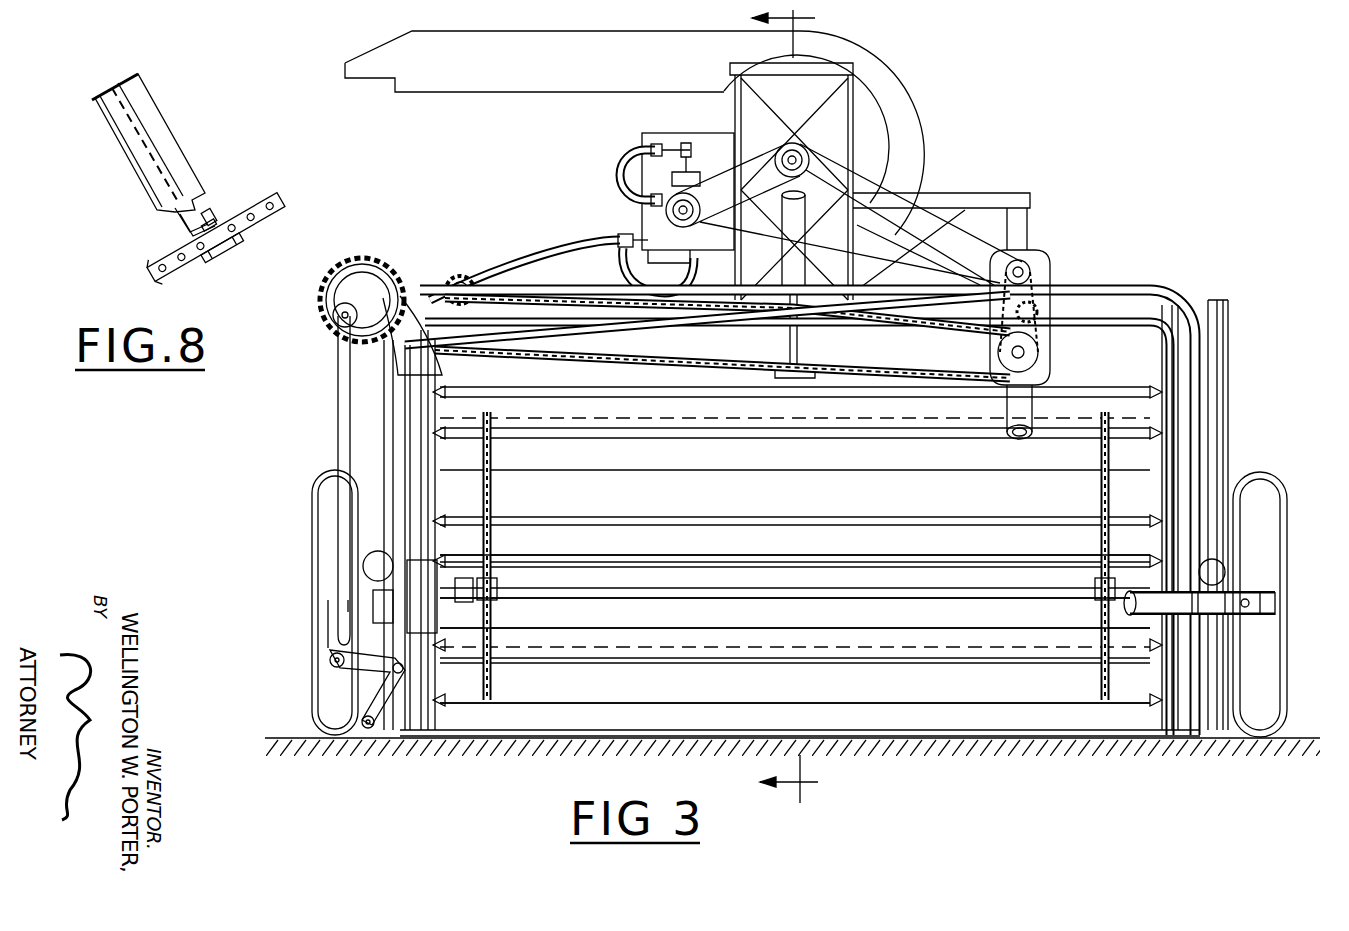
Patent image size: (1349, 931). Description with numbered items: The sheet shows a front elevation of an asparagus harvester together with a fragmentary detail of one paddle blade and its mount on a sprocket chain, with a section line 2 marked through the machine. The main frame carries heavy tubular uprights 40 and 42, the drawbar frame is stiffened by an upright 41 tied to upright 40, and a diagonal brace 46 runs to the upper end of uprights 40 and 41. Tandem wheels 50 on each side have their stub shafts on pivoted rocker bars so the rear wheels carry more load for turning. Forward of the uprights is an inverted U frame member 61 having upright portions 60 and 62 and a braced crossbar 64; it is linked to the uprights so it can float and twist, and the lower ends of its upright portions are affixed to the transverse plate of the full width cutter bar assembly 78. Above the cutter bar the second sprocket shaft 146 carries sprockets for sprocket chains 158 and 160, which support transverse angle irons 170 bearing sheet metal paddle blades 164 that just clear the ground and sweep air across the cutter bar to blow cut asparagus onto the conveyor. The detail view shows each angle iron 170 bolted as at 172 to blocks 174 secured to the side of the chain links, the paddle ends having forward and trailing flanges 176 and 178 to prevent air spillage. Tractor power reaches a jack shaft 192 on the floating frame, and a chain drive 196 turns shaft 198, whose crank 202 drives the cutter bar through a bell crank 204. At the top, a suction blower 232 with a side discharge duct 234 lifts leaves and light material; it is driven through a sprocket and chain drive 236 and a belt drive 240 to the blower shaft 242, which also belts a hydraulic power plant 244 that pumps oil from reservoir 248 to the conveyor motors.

In FIG. 3, the section line 2- 2 is at (796, 402).
In FIG. 3, the tubular upright 40 is at (1180, 369).
In FIG. 3, the upright 41 is at (1227, 380).
In FIG. 3, the tubular upright 42 is at (415, 405).
In FIG. 3, the diagonal brace 46 is at (1213, 411).
In FIG. 3, the tandem wheels 50 is at (322, 696).
In FIG. 3, the upright portion 60 is at (1197, 454).
In FIG. 3, the inverted U frame member 61 is at (1143, 286).
In FIG. 3, the upright portion 62 is at (396, 449).
In FIG. 3, the braced crossbar 64 is at (1095, 287).
In FIG. 3, the cutter bar assembly 78 is at (1028, 745).
In FIG. 3, the second sprocket shaft 146 is at (600, 598).
In FIG. 8, the sprocket chain 158 is at (272, 218).
In FIG. 3, the sprocket chain 158 is at (1100, 489).
In FIG. 3, the sprocket chain 160 is at (492, 489).
In FIG. 8, the paddle blade 164 is at (160, 158).
In FIG. 3, the paddle blade 164 is at (480, 680).
In FIG. 8, the angle iron 170 is at (192, 229).
In FIG. 8, the bolt 172 is at (214, 214).
In FIG. 8, the block 174 is at (212, 255).
In FIG. 8, the forward flange 176 is at (136, 146).
In FIG. 8, the trailing flange 178 is at (150, 118).
In FIG. 3, the jack shaft 192 is at (1023, 346).
In FIG. 3, the chain drive 196 is at (506, 295).
In FIG. 3, the shaft 198 is at (368, 296).
In FIG. 3, the crank 202 is at (338, 317).
In FIG. 3, the bell crank 204 is at (362, 670).
In FIG. 3, the blower 232 is at (878, 86).
In FIG. 3, the side discharge duct 234 is at (516, 92).
In FIG. 3, the sprocket and chain drive 236 is at (1020, 268).
In FIG. 3, the belt drive 240 is at (808, 197).
In FIG. 3, the blower shaft 242 is at (810, 150).
In FIG. 3, the hydraulic power plant 244 is at (672, 212).
In FIG. 3, the reservoir 248 is at (648, 143).